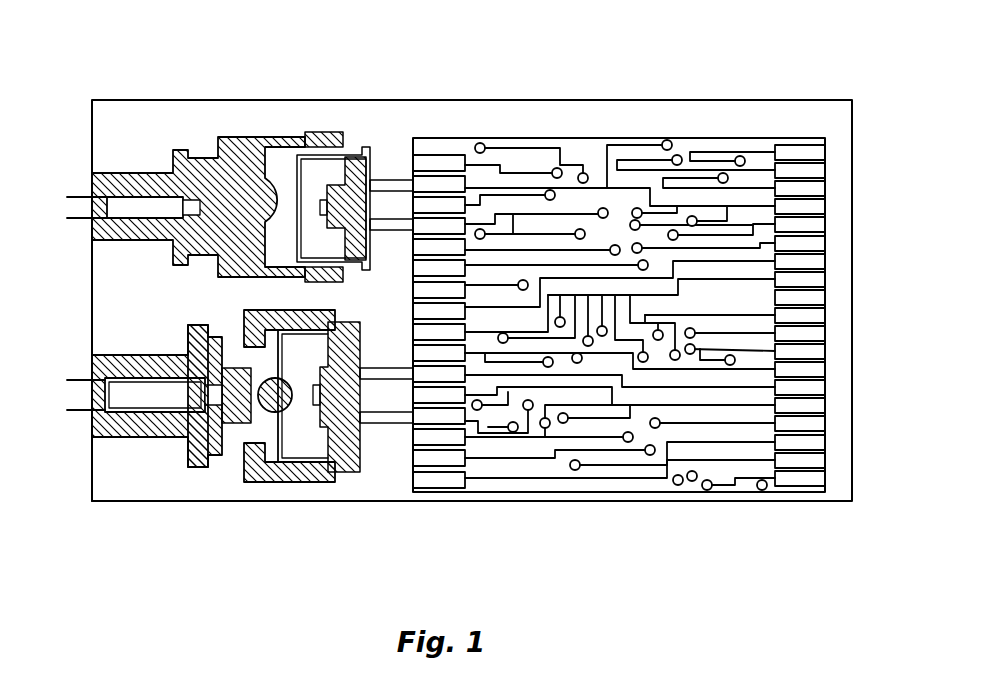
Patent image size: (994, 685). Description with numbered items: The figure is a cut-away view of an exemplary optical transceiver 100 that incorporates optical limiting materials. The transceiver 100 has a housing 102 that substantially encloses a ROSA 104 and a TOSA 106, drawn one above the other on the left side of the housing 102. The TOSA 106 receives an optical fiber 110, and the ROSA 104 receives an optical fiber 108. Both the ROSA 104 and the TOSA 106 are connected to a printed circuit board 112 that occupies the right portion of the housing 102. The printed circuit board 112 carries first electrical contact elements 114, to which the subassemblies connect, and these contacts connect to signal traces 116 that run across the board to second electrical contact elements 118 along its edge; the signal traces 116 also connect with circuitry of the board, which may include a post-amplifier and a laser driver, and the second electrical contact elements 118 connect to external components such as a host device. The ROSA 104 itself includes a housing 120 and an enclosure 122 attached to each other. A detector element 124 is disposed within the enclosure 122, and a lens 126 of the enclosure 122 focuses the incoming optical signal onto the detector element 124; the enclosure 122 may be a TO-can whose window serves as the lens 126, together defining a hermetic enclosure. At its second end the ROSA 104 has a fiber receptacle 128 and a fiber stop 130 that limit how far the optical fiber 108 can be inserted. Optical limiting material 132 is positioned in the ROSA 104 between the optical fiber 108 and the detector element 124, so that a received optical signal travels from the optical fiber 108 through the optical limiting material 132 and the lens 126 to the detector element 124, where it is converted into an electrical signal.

The transceiver 100 is at (840, 65).
The housing 102 is at (632, 100).
The ROSA 104 is at (243, 497).
The TOSA 106 is at (239, 170).
The optical fiber 108 is at (212, 447).
The optical fiber 110 is at (92, 240).
The printed circuit board 112 is at (672, 358).
The first electrical contact elements 114 is at (410, 285).
The signal traces 116 is at (686, 370).
The second electrical contact elements 118 is at (817, 280).
The housing 120 is at (197, 467).
The enclosure 122 is at (285, 461).
The detector element 124 is at (323, 398).
The lens 126 is at (268, 462).
The fiber receptacle 128 is at (172, 355).
The fiber stop 130 is at (214, 338).
The optical limiting material 132 is at (247, 487).